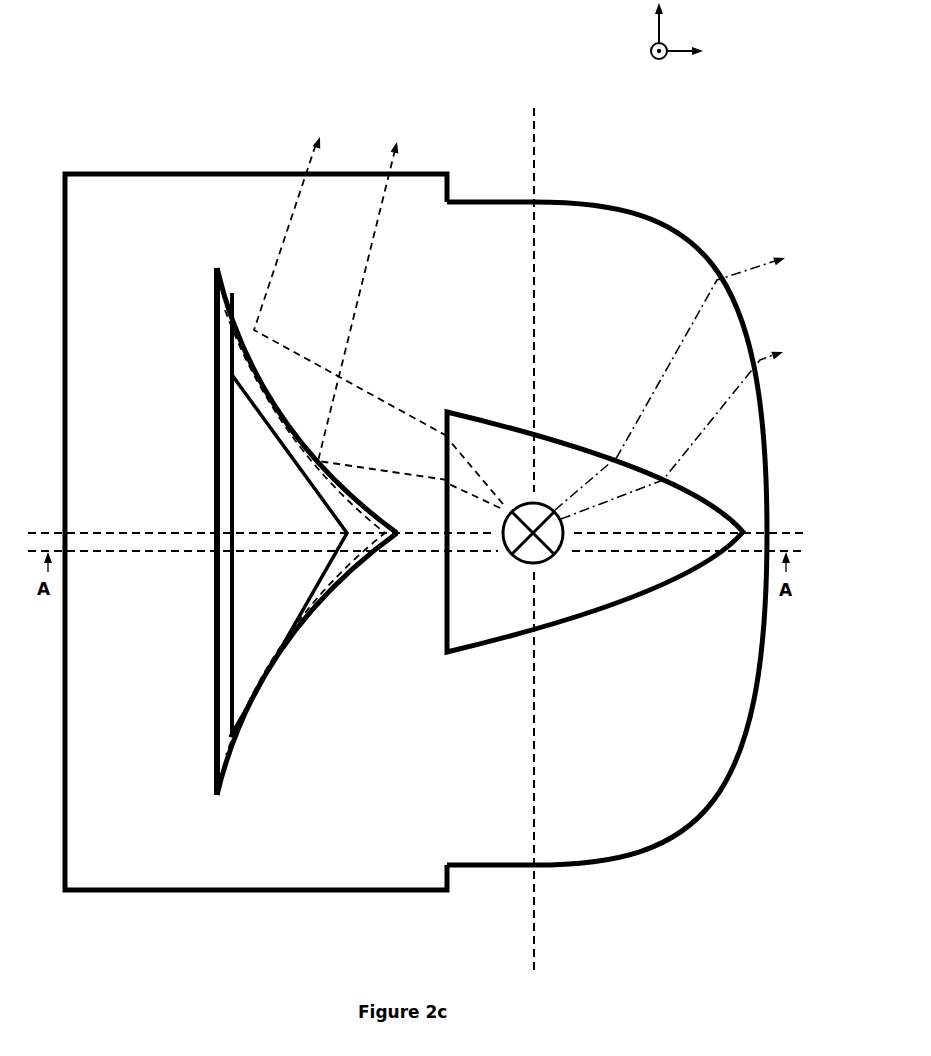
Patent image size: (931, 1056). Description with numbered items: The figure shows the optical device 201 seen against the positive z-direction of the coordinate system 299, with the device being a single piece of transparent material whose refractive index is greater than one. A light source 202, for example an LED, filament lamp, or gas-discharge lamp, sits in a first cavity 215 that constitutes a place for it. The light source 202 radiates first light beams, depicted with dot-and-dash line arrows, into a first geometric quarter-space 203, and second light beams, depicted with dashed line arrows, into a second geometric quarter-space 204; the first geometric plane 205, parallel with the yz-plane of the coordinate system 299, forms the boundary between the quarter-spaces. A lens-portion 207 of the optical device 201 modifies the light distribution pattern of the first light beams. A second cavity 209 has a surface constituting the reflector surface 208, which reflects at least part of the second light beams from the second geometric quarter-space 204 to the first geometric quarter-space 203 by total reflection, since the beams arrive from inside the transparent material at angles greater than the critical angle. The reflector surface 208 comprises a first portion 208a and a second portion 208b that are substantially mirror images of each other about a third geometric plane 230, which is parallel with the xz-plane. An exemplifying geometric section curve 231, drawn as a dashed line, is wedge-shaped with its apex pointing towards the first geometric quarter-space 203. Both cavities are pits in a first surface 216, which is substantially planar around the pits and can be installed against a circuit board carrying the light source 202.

The optical device 201 is at (174, 104).
The light source 202 is at (541, 563).
The first geometric quarter-space 203 is at (741, 211).
The second geometric quarter-space 204 is at (80, 156).
The first geometric plane 205 is at (538, 168).
The lens-portion 207 is at (630, 350).
The reflector surface 208 is at (268, 417).
The first portion 208a is at (263, 392).
The second portion 208b is at (248, 686).
The second cavity 209 is at (290, 516).
The first cavity 215 is at (621, 590).
The first surface 216 is at (406, 772).
The third geometric plane 230 is at (801, 533).
The geometric section curve 231 is at (288, 428).
The coordinate system 299 is at (706, 33).